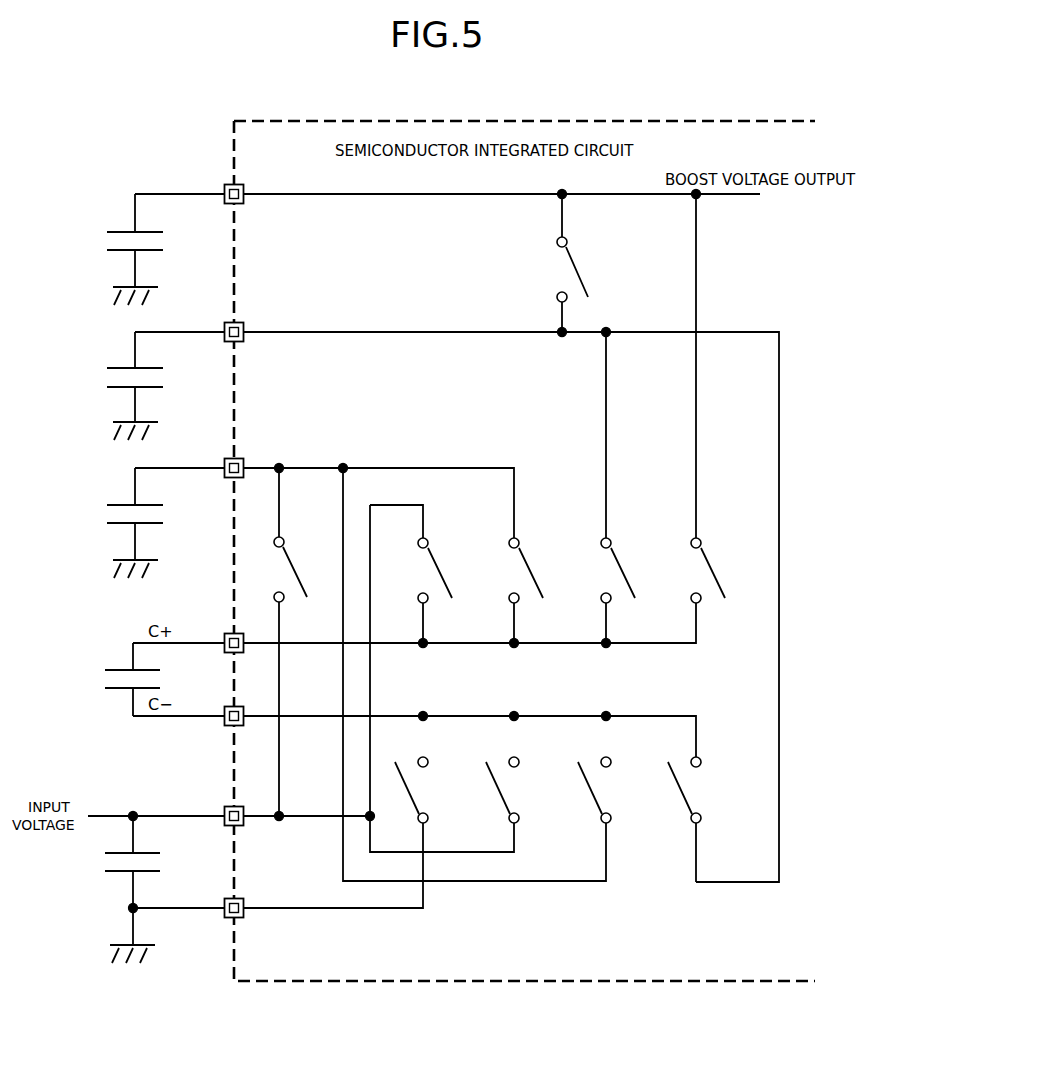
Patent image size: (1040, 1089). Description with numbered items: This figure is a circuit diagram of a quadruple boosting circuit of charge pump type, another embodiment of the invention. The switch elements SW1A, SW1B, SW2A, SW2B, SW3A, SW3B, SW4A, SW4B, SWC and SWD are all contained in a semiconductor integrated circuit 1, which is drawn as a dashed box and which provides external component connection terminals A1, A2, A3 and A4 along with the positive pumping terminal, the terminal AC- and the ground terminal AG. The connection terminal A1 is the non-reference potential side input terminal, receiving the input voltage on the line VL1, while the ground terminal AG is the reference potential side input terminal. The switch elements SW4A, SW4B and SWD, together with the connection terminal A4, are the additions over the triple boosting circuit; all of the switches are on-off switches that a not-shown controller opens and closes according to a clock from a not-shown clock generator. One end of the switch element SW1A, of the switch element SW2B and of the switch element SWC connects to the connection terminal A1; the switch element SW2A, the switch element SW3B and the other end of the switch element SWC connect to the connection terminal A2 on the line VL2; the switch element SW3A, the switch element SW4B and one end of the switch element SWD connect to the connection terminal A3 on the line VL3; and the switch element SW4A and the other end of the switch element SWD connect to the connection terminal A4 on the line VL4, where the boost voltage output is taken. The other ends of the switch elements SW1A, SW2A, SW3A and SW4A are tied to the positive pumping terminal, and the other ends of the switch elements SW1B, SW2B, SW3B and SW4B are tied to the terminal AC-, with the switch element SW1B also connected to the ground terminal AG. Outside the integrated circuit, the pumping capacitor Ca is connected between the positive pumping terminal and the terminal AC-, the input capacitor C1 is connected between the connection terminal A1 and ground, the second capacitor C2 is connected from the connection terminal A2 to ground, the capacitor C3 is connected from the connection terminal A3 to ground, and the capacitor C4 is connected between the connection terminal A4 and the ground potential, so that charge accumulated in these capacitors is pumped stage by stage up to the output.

The semiconductor integrated circuit 1 is at (458, 121).
The connection terminal A4 is at (244, 186).
The connection terminal A3 is at (244, 324).
The connection terminal A2 is at (244, 460).
The connection terminal A1 is at (226, 806).
The connection terminal AC- is at (225, 726).
The connection terminal AG is at (225, 918).
The voltage line VL4 is at (447, 186).
The voltage line VL3 is at (457, 596).
The voltage line VL2 is at (370, 664).
The voltage line VL1 (input voltage) VL1 is at (301, 678).
The capacitor C4 is at (104, 240).
The capacitor C3 is at (104, 377).
The capacitor C2 is at (104, 514).
The capacitor C1 is at (104, 858).
The pumping capacitor Ca is at (104, 681).
The switch element SWD is at (573, 258).
The switch element SWC is at (291, 560).
The switch element SW1A is at (433, 560).
The switch element SW2A is at (524, 560).
The switch element SW3A is at (616, 560).
The switch element SW4A is at (706, 560).
The switch element SW1B is at (423, 789).
The switch element SW2B is at (514, 789).
The switch element SW3B is at (606, 789).
The switch element SW4B is at (696, 789).